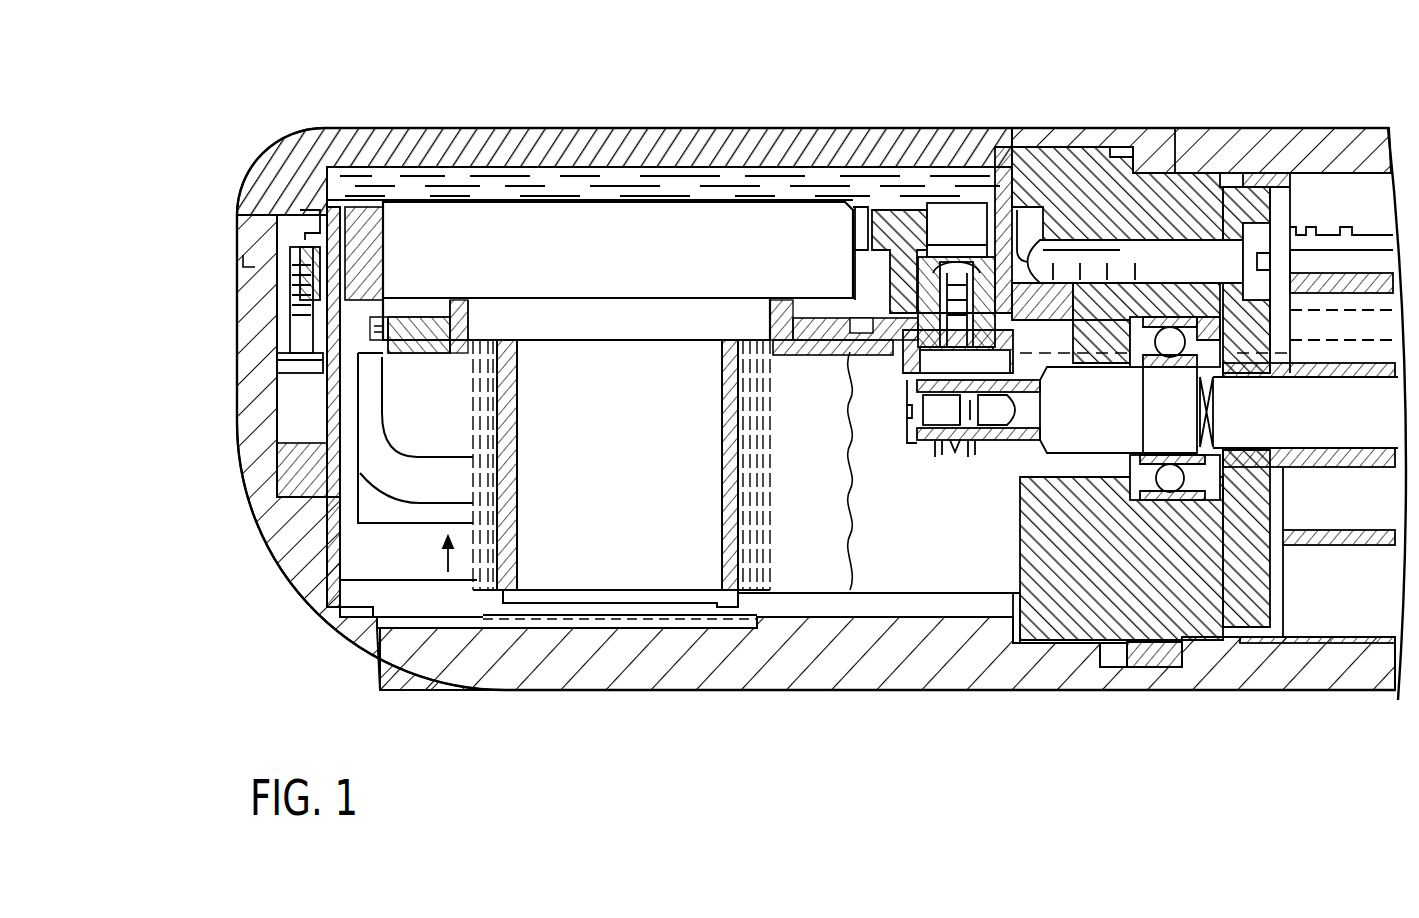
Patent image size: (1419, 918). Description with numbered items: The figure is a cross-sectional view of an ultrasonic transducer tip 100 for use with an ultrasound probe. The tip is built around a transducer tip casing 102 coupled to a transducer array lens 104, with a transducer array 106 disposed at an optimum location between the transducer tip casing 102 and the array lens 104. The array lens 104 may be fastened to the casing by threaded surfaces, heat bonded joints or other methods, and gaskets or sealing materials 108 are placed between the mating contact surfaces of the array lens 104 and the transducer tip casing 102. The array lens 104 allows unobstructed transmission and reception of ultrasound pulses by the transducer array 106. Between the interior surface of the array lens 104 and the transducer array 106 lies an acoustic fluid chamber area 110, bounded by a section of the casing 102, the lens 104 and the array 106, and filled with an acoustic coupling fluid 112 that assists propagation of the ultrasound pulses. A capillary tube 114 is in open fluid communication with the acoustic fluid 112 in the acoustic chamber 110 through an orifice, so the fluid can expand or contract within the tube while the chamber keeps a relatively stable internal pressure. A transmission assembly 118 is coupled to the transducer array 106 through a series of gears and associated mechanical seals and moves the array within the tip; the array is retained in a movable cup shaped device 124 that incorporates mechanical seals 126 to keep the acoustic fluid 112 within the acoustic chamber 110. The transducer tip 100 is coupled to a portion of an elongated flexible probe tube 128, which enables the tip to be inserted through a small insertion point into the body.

The ultrasonic transducer tip 100 is at (198, 448).
The transducer tip casing 102 is at (510, 663).
The transducer array lens 104 is at (518, 150).
The transducer array 106 is at (668, 240).
The gaskets or sealing materials 108 is at (1015, 147).
The acoustic fluid chamber area 110 is at (352, 188).
The acoustic coupling fluid 112 is at (429, 188).
The capillary tube 114 is at (387, 478).
The transmission assembly 118 is at (953, 443).
The movable cup shaped device 124 is at (853, 233).
The mechanical seals 126 is at (330, 285).
The elongated flexible probe tube 128 is at (1207, 158).